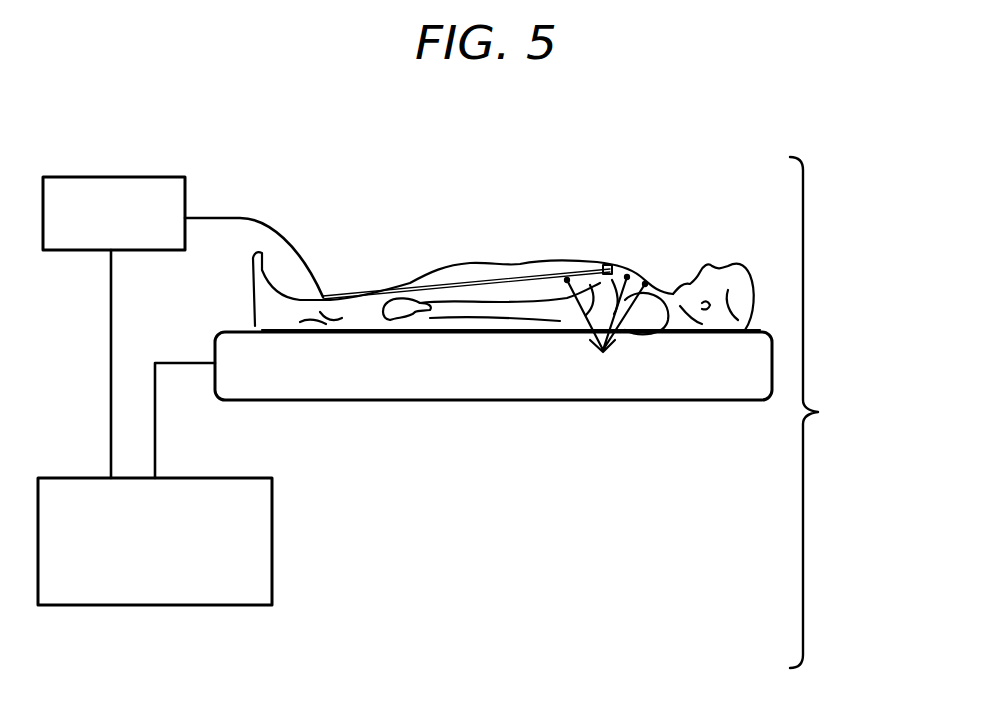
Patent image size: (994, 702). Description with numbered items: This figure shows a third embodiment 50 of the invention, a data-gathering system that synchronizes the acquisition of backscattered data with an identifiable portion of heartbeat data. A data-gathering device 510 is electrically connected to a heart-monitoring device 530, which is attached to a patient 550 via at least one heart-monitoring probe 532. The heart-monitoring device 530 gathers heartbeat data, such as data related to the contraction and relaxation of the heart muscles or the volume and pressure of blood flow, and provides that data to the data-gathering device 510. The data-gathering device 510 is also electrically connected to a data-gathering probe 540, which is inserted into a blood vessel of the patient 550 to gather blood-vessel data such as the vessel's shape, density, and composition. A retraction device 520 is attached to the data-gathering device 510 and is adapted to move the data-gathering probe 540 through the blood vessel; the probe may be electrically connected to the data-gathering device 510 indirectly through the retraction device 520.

The third embodiment 50 is at (830, 412).
The data-gathering device 510 is at (272, 555).
The retraction device 520 is at (117, 176).
The heart-monitoring device 530 is at (497, 400).
The heart-monitoring probe 532 is at (632, 352).
The data-gathering probe 540 is at (608, 264).
The patient 550 is at (723, 278).